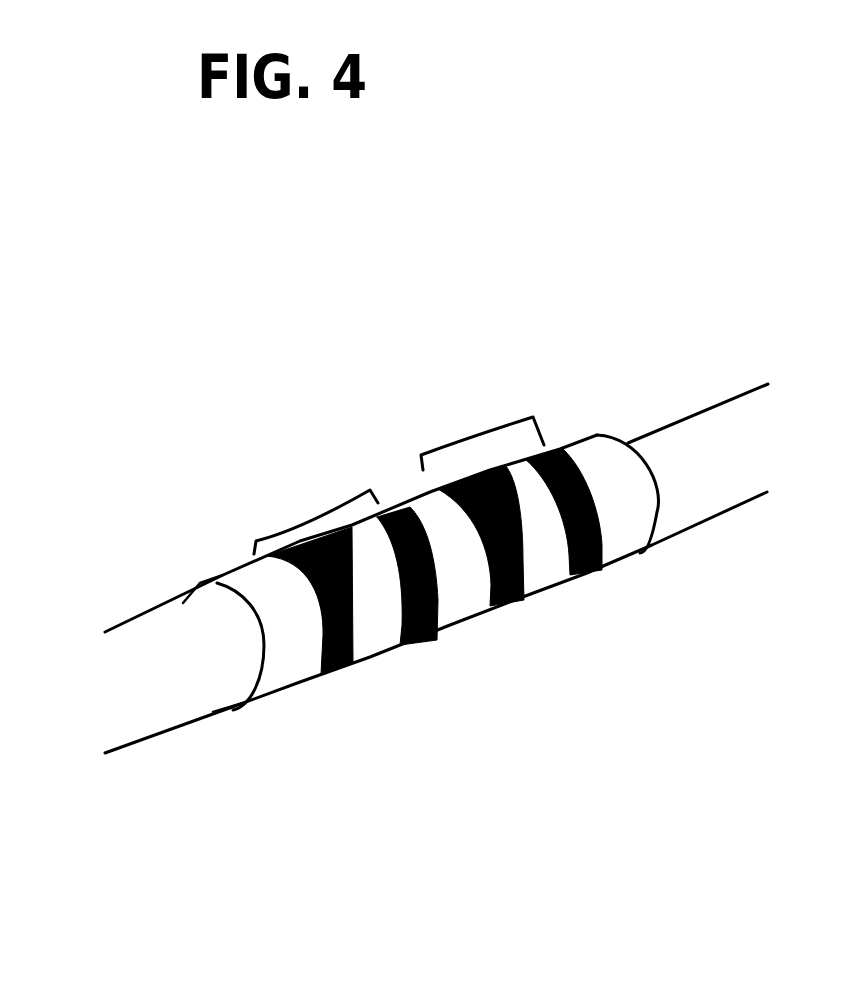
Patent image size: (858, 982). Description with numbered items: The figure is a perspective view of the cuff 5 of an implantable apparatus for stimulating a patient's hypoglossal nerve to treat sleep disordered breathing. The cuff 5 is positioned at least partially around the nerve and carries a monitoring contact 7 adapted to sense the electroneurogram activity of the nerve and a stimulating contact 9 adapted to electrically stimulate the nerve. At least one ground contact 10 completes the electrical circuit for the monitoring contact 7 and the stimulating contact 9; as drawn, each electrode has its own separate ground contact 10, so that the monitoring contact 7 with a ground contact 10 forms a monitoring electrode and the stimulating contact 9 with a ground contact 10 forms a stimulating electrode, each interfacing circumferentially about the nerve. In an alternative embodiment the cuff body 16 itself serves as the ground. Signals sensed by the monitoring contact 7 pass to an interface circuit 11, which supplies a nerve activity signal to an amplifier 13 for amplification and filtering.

The cuff 5 is at (343, 467).
The monitoring contact 7 is at (578, 578).
The stimulating contact 9 is at (345, 667).
The ground contact 10 is at (430, 633).
The interface circuit 11 is at (473, 427).
The amplifier 13 is at (285, 520).
The cuff body 16 is at (257, 588).